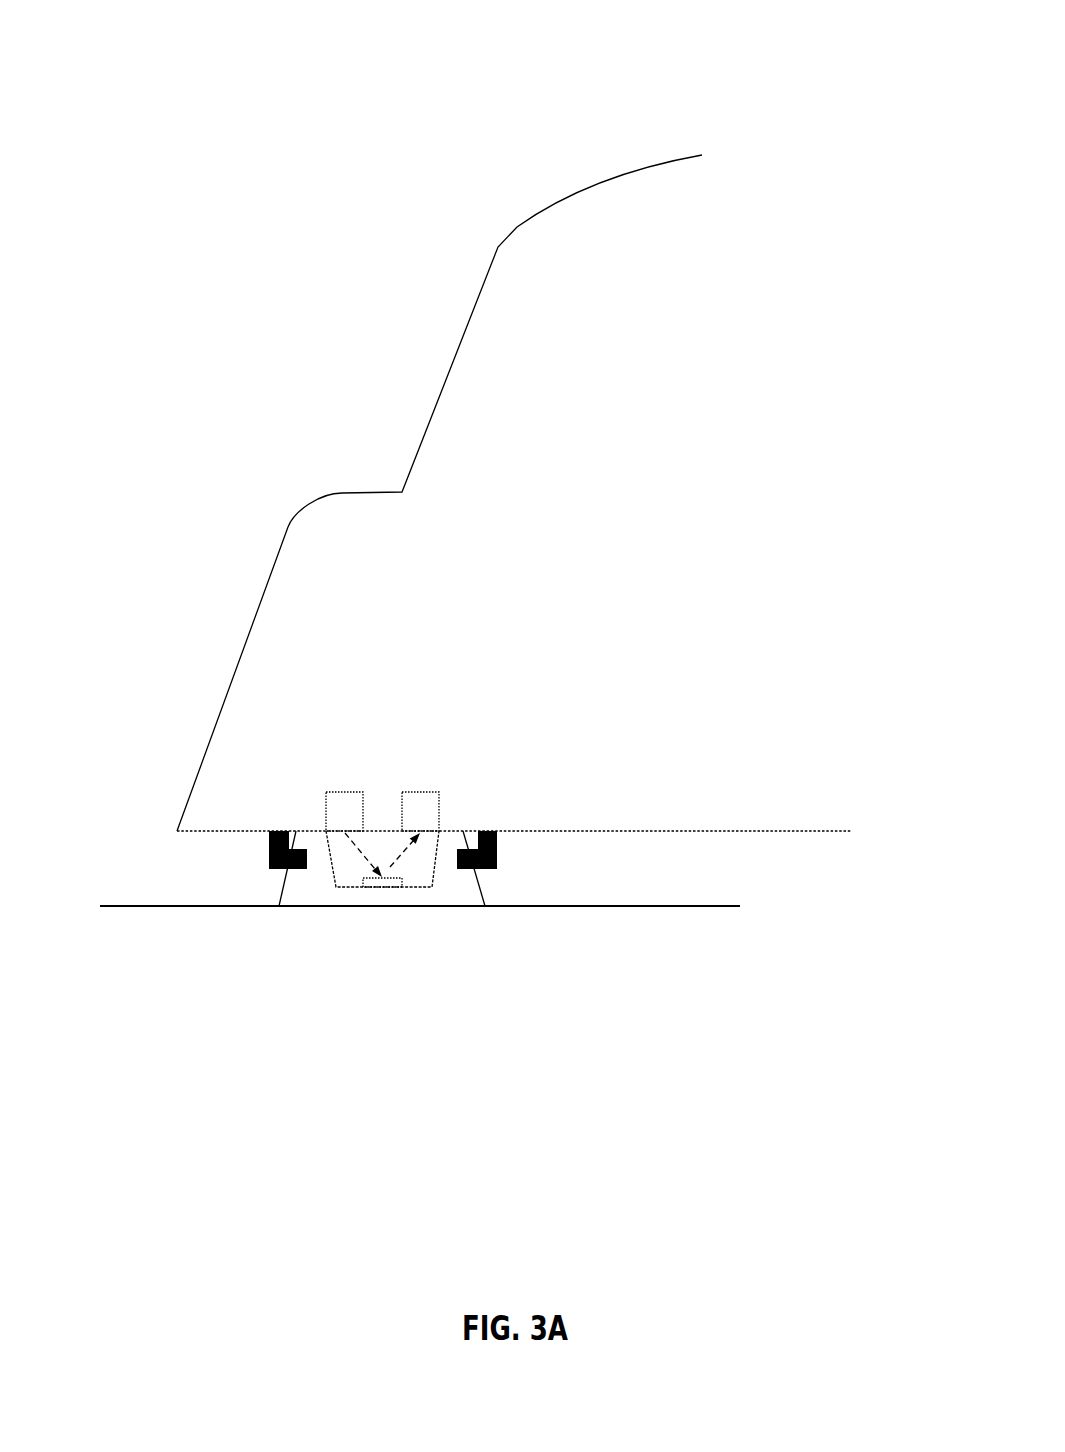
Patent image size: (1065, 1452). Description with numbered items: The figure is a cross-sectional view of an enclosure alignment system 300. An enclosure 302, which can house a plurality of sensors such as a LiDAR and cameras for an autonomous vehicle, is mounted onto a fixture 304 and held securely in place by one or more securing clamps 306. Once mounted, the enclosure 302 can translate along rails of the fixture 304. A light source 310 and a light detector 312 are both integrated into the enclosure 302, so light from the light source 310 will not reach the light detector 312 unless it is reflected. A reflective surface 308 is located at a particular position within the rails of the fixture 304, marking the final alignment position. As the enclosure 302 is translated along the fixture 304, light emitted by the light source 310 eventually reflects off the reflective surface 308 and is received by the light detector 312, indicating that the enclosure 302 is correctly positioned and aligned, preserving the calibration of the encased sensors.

The enclosure alignment system 300 is at (100, 51).
The enclosure 302 is at (517, 227).
The fixture 304 is at (282, 883).
The securing clamps 306 is at (497, 867).
The reflective surface 308 is at (362, 880).
The light source 310 is at (345, 812).
The light detector 312 is at (420, 812).